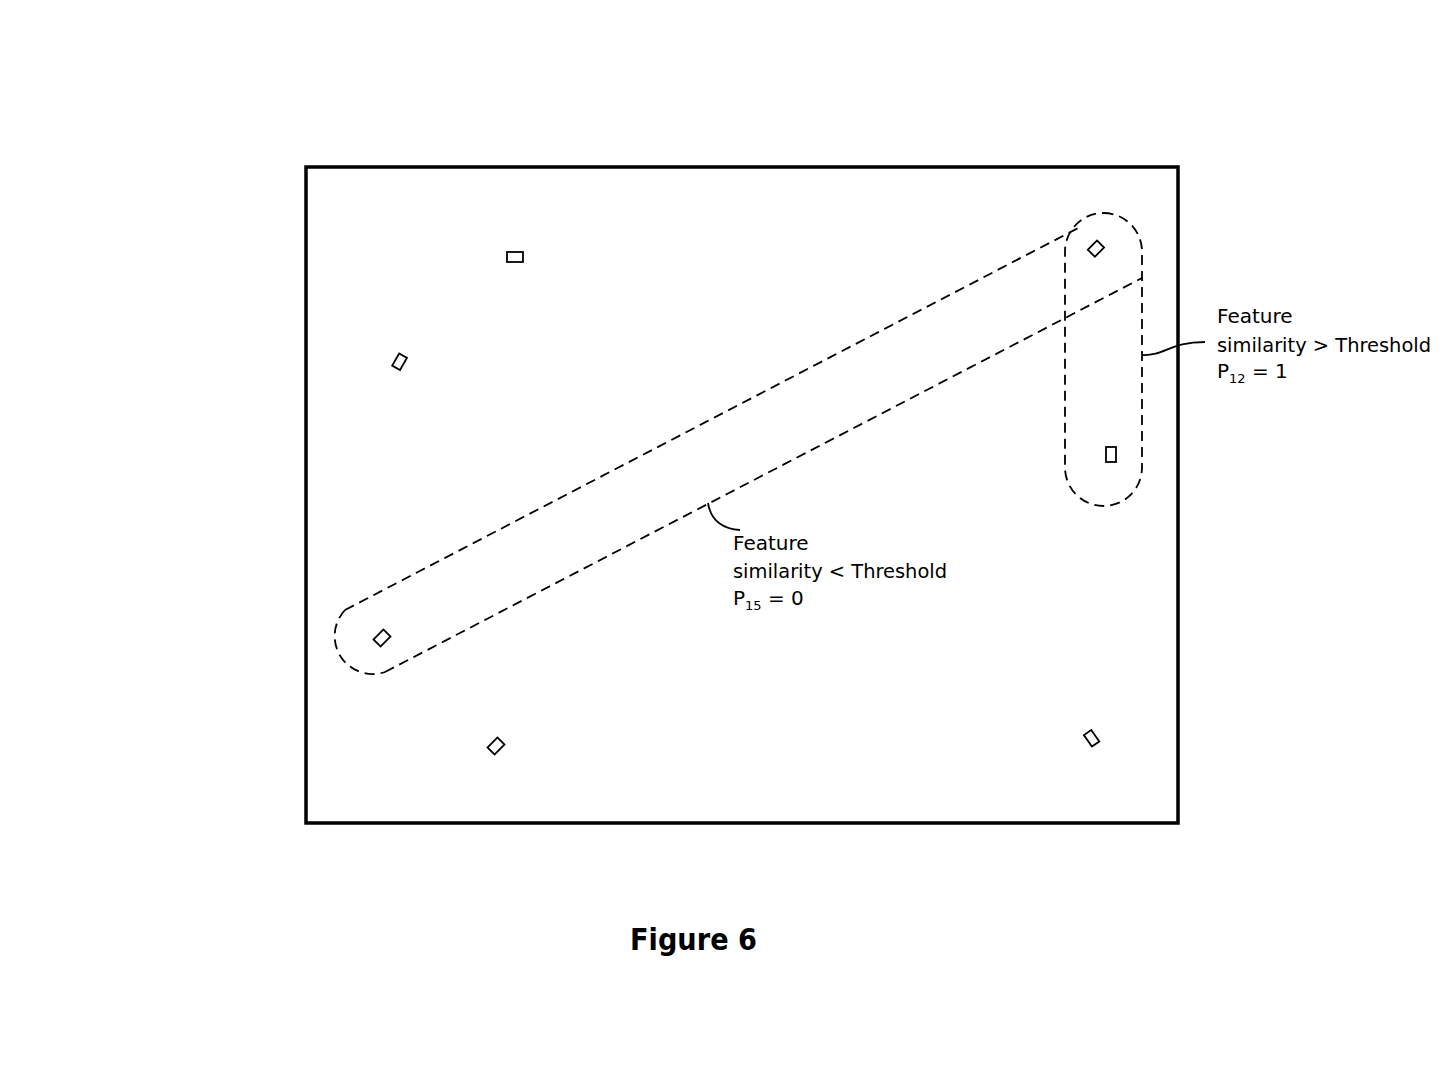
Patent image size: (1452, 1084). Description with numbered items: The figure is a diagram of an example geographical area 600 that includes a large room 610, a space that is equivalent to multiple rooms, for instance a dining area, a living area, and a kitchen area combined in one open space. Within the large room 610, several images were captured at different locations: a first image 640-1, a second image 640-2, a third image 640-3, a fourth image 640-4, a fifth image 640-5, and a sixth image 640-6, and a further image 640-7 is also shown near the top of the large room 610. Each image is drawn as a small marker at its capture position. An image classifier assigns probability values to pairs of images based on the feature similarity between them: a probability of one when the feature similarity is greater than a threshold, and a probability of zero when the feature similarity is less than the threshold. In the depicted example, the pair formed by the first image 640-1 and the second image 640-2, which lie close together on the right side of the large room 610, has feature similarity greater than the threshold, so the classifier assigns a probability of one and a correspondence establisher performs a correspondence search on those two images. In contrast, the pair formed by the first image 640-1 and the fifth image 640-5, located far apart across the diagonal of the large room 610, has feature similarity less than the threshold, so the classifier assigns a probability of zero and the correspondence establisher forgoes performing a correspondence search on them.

The geographical area 600 is at (168, 72).
The large room 610 is at (742, 495).
The first image 640-1 is at (1103, 250).
The second image 640-2 is at (1116, 455).
The third image 640-3 is at (1098, 740).
The fourth image 640-4 is at (498, 756).
The fifth image 640-5 is at (377, 640).
The sixth image 640-6 is at (393, 362).
The image 640-7 is at (515, 252).